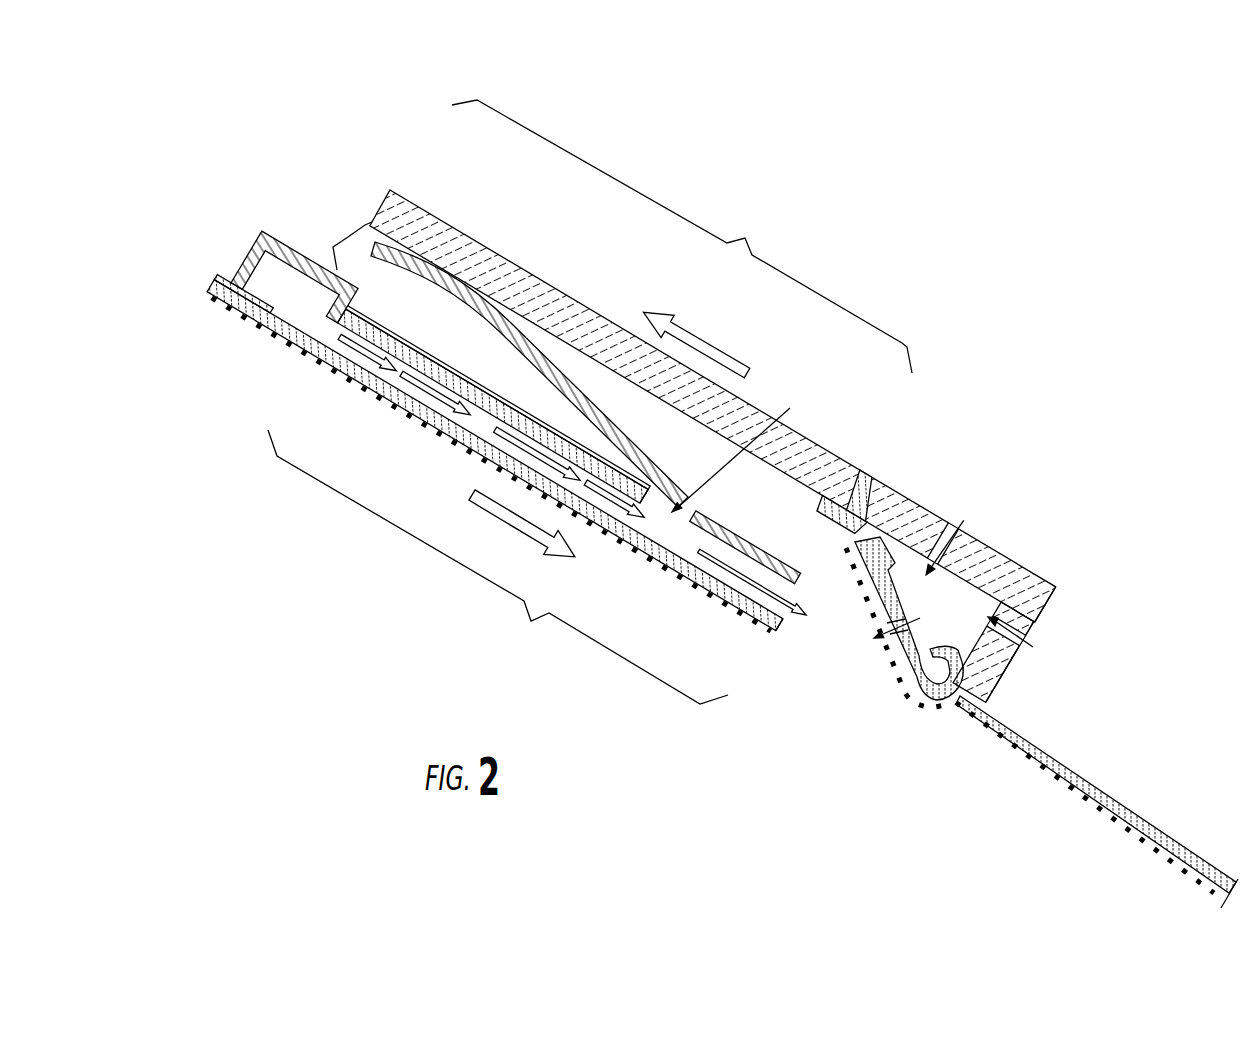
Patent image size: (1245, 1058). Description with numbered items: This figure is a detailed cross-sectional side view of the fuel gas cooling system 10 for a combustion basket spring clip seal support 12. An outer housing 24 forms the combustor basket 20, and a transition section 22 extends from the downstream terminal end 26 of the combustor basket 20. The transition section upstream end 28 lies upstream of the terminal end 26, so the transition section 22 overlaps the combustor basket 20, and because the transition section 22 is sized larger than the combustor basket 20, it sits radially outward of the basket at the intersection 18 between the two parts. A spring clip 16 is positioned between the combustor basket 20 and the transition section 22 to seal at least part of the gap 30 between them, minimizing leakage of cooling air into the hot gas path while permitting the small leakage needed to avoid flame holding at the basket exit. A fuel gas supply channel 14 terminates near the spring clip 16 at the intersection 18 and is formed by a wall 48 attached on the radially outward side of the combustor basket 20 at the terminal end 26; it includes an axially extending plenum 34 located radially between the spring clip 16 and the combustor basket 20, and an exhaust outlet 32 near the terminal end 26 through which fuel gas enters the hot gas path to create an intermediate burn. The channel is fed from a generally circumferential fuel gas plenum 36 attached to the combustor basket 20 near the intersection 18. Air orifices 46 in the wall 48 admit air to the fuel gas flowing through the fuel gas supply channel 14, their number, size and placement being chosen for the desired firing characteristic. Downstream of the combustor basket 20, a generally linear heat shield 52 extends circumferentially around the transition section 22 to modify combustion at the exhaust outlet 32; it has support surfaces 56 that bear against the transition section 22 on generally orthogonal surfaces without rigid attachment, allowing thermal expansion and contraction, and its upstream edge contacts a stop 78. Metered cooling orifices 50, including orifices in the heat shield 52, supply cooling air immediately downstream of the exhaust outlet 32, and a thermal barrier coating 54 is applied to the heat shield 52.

The fuel gas cooling system 10 is at (300, 140).
The combustion basket spring clip seal support 12 is at (331, 242).
The fuel gas supply channel 14 is at (498, 567).
The spring clip 16 is at (550, 360).
The intersection 18 is at (682, 236).
The combustor basket 20 is at (277, 338).
The transition section 22 is at (913, 498).
The outer housing 24 is at (219, 274).
The terminal end 26 is at (783, 627).
The transition section upstream end 28 is at (388, 189).
The gap 30 is at (333, 247).
The exhaust outlet 32 is at (797, 616).
The axially extending plenum 34 is at (562, 468).
The fuel gas plenum 36 is at (307, 303).
The air orifice 46 is at (723, 398).
The wall 48 is at (602, 462).
The metered cooling orifice 50 is at (967, 520).
The heat shield 52 is at (925, 695).
The thermal barrier coating 54 is at (675, 575).
The support surface 56 is at (884, 538).
The stop 78 is at (834, 519).